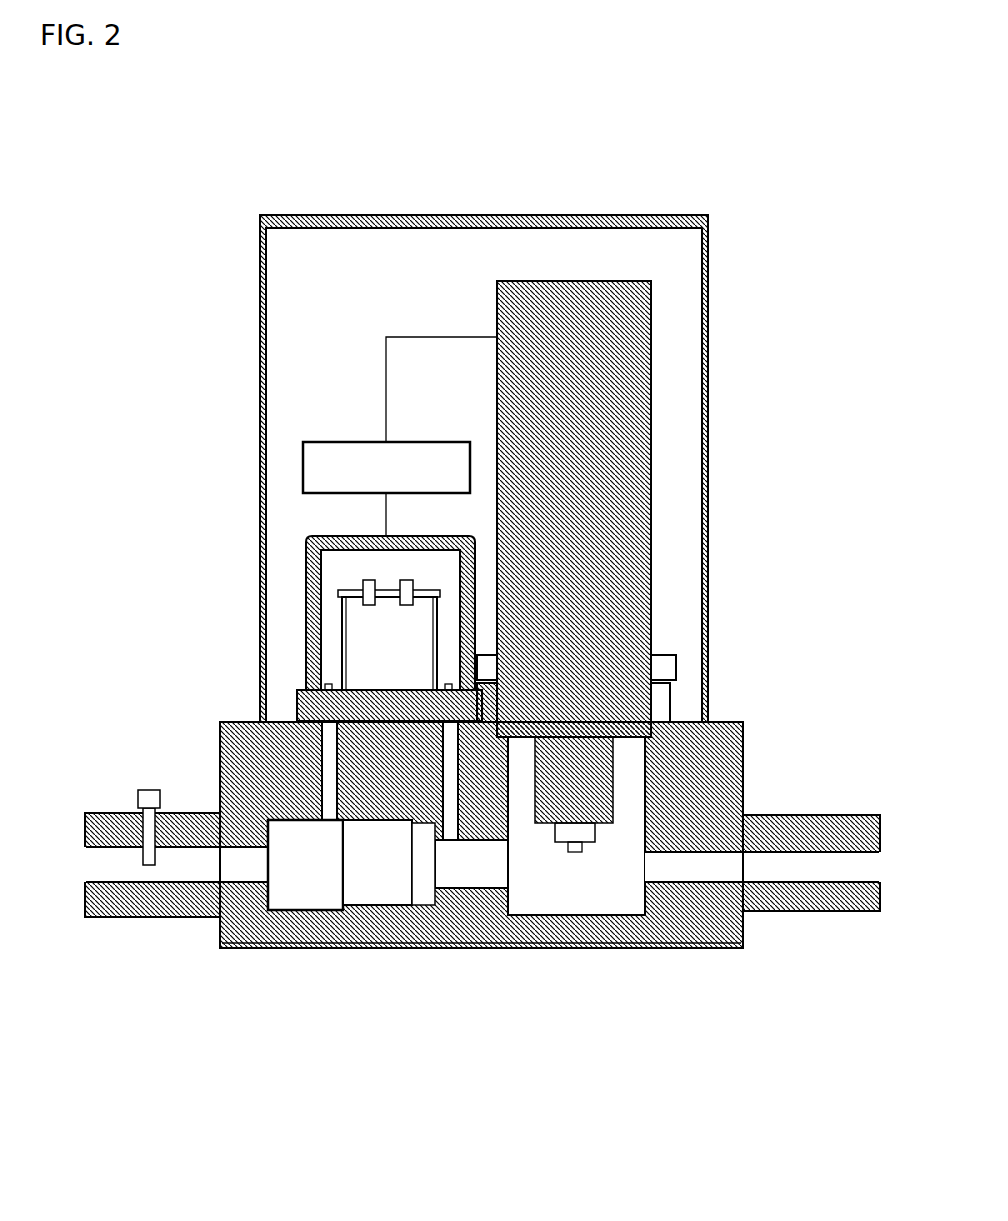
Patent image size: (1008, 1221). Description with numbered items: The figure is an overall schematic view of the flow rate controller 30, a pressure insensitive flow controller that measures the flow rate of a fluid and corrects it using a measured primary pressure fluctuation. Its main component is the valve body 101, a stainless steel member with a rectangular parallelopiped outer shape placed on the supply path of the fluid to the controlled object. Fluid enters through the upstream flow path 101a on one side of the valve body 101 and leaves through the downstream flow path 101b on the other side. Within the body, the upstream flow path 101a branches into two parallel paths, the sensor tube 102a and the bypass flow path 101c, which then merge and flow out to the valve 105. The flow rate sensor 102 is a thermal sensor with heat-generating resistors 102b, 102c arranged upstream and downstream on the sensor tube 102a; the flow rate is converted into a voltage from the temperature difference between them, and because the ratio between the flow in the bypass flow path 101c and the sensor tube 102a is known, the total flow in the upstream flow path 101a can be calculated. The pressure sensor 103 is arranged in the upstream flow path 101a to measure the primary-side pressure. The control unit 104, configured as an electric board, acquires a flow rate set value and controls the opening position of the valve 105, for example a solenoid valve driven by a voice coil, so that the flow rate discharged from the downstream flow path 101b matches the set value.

The flow rate controller 30 is at (760, 197).
The valve body 101 is at (472, 948).
The upstream flow path 101a is at (235, 870).
The downstream flow path 101b is at (722, 873).
The bypass flow path 101c is at (362, 865).
The flow rate sensor 102 is at (275, 600).
The sensor tube 102a is at (333, 668).
The heat-generating resistor 102b is at (313, 582).
The heat-generating resistor 102c is at (378, 588).
The pressure sensor 103 is at (143, 788).
The control unit 104 is at (298, 448).
The valve 105 is at (638, 496).